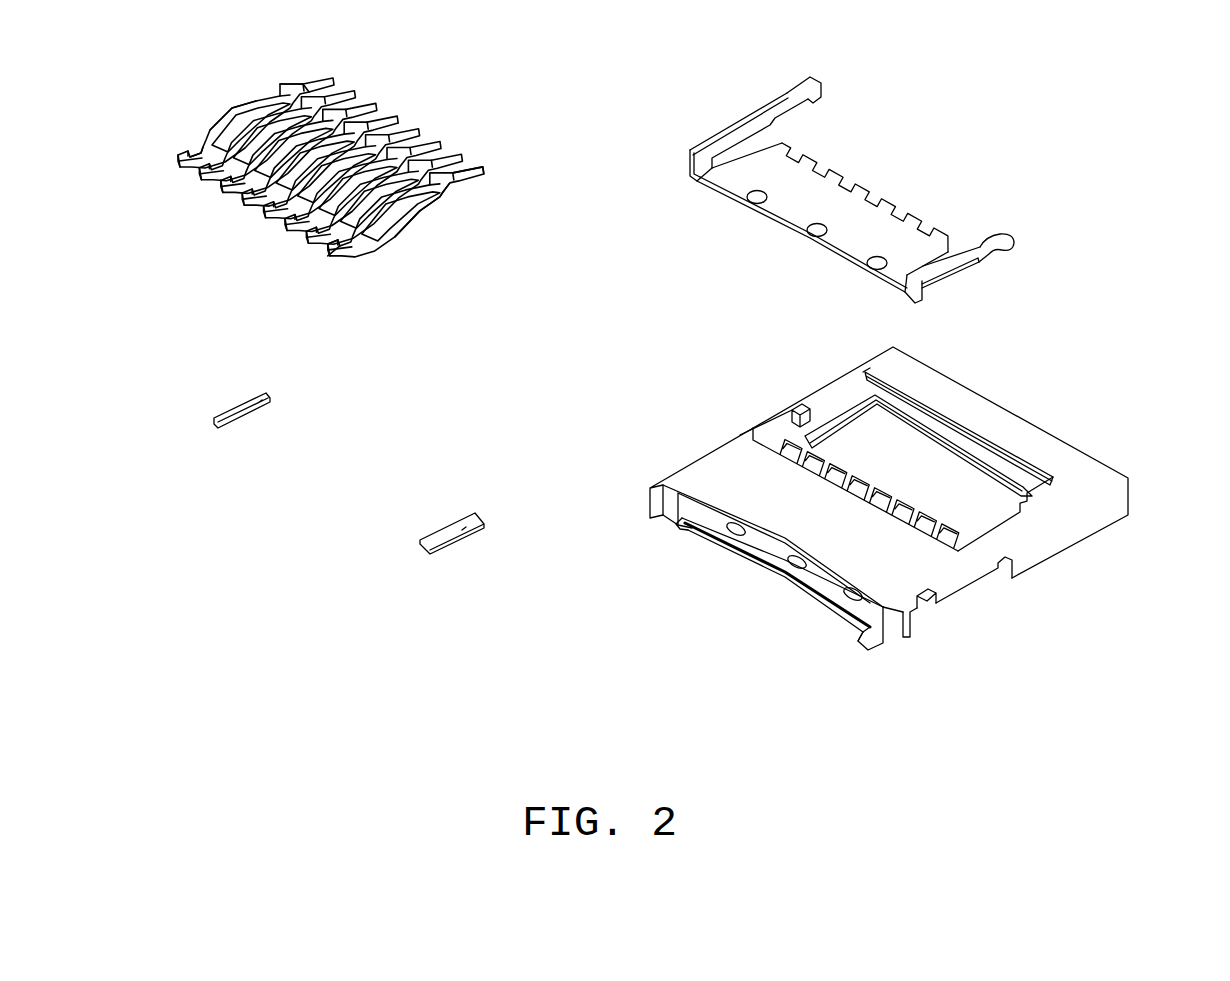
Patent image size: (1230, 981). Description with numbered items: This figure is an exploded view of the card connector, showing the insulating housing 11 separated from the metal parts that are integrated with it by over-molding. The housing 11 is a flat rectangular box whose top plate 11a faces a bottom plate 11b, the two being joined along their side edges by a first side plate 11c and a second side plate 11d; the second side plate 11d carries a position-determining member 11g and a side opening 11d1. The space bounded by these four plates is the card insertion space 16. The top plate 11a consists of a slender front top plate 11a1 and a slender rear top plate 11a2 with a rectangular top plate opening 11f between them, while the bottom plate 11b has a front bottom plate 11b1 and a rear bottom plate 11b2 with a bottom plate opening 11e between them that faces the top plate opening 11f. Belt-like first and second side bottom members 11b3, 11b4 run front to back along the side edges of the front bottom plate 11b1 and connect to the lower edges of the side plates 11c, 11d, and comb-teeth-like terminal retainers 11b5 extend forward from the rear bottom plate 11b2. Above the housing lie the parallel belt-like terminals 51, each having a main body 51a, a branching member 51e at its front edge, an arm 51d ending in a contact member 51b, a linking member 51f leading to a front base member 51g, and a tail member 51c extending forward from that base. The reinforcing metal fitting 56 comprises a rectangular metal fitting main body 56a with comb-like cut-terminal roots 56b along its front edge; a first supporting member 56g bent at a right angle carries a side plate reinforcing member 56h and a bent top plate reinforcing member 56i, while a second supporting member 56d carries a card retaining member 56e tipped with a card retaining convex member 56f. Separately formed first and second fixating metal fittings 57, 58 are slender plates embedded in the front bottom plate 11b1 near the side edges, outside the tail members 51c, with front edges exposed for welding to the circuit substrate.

The housing 11 is at (1133, 497).
The top plate 11a is at (723, 470).
The front top plate 11a1 is at (1033, 440).
The rear top plate 11a2 is at (780, 530).
The bottom plate 11b is at (700, 532).
The front bottom plate 11b1 is at (1003, 457).
The rear bottom plate 11b2 is at (825, 582).
The first side bottom member 11b3 is at (657, 523).
The second side bottom member 11b4 is at (867, 640).
The terminal retainers 11b5 is at (837, 470).
The first side plate 11c is at (652, 503).
The second side plate 11d is at (1020, 565).
The side opening 11d1 is at (973, 583).
The bottom plate opening 11e is at (917, 440).
The top plate opening 11f is at (983, 520).
The position-determining member 11g is at (1068, 485).
The card insertion space 16 is at (780, 553).
The terminals 51 is at (393, 227).
The main body 51a is at (343, 252).
The contact member 51b is at (427, 200).
The tail member 51c is at (483, 168).
The arm 51d is at (380, 223).
The branching member 51e is at (203, 143).
The linking member 51f is at (230, 117).
The front base member 51g is at (293, 83).
The reinforcing metal fitting 56 is at (773, 228).
The metal fitting main body 56a is at (853, 240).
The cut-terminal roots 56b is at (867, 192).
The second supporting member 56d is at (923, 293).
The card retaining member 56e is at (973, 272).
The card retaining convex member 56f is at (987, 240).
The first supporting member 56g is at (687, 163).
The side plate reinforcing member 56h is at (740, 112).
The top plate reinforcing member 56i is at (810, 82).
The first fixating metal fitting 57 is at (240, 425).
The second fixating metal fitting 58 is at (455, 545).